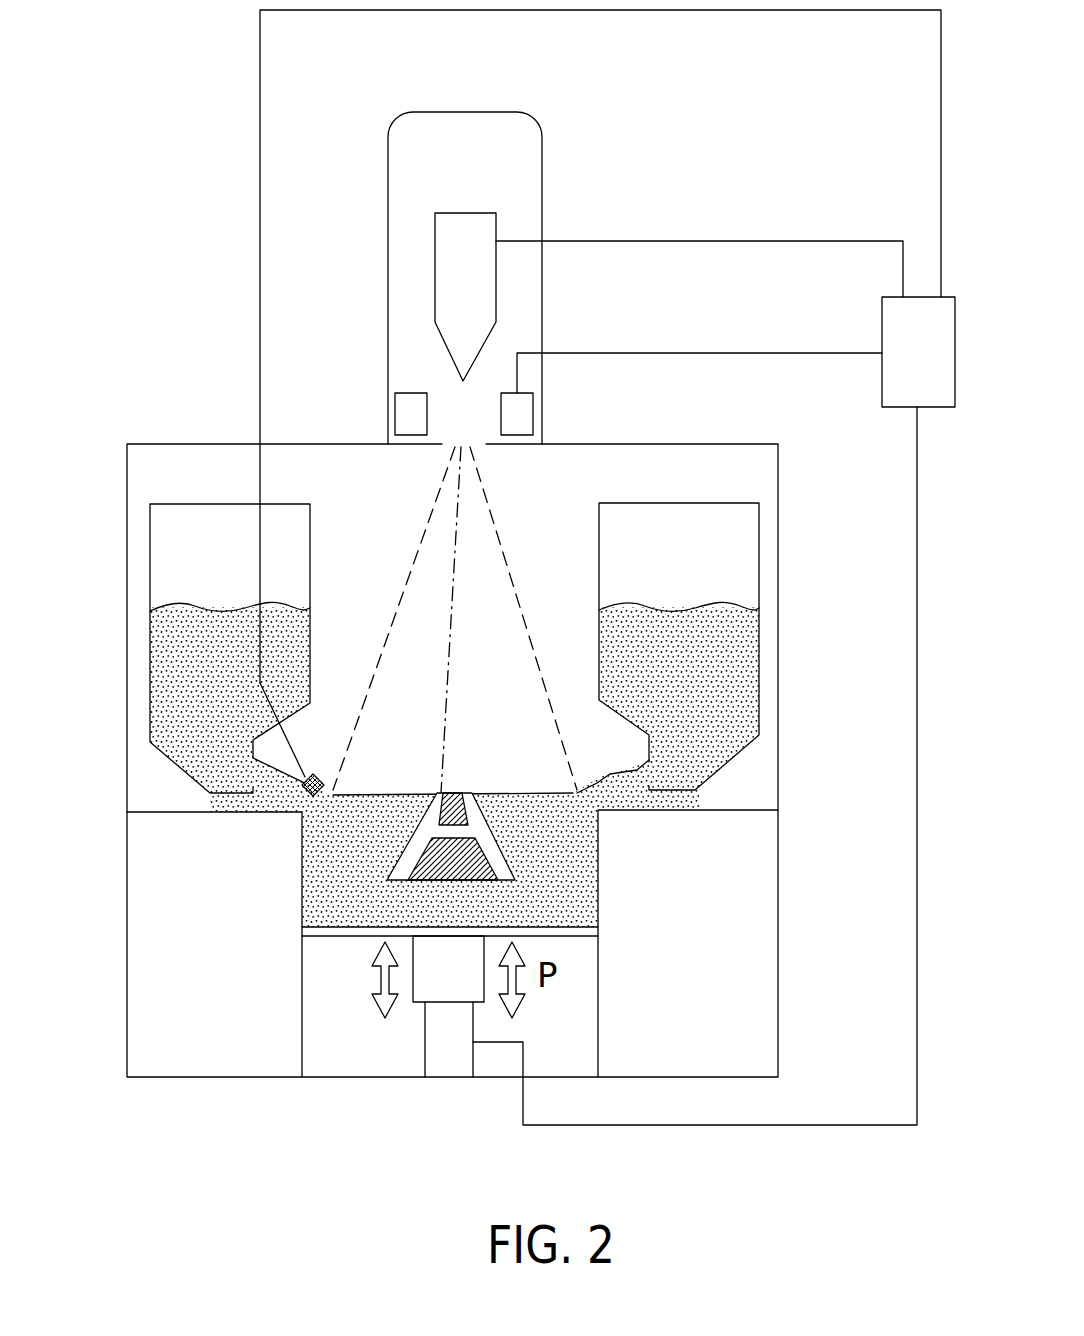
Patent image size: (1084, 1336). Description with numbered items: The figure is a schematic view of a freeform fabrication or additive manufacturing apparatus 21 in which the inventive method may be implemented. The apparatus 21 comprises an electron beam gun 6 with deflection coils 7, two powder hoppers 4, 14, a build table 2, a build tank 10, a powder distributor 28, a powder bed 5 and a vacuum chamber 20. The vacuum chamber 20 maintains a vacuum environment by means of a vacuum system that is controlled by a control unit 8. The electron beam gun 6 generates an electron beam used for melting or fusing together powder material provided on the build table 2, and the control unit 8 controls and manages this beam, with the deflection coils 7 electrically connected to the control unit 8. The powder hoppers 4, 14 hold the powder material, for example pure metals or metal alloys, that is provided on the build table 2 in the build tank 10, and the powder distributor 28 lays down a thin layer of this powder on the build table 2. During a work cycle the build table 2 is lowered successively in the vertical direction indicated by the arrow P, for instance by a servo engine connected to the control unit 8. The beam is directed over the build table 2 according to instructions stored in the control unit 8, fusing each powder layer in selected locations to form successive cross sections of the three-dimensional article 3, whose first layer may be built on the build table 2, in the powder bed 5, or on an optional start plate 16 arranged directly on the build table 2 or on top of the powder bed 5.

The build table 2 is at (355, 938).
The three-dimensional article 3 is at (360, 830).
The powder hopper 4 is at (200, 672).
The powder bed 5 is at (560, 835).
The electron beam gun 6 is at (446, 287).
The deflection coils 7 is at (405, 418).
The control unit 8 is at (714, 711).
The build tank 10 is at (300, 998).
The powder hopper 14 is at (693, 660).
The start plate 16 is at (505, 900).
The vacuum chamber 20 is at (778, 1010).
The additive manufacturing apparatus 21 is at (748, 140).
The powder distributor 28 is at (307, 793).